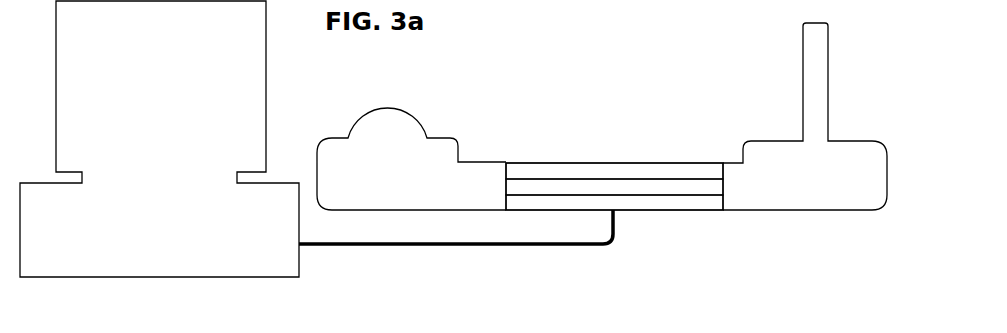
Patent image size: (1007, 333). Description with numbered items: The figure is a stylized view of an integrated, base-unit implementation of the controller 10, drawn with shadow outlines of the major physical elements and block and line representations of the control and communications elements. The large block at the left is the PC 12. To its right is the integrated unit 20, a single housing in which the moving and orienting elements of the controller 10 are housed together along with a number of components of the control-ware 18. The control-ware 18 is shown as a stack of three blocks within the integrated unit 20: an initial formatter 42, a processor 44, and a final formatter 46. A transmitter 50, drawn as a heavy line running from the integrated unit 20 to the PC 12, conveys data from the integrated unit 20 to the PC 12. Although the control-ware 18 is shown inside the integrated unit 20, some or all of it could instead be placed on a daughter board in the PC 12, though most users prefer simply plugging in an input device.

The controller 10 is at (650, 51).
The PC 12 is at (173, 100).
The control-ware 18 is at (701, 222).
The integrated unit 20 is at (692, 131).
The initial formatter 42 is at (670, 172).
The processor 44 is at (635, 190).
The final formatter 46 is at (600, 202).
The transmitter 50 is at (610, 247).